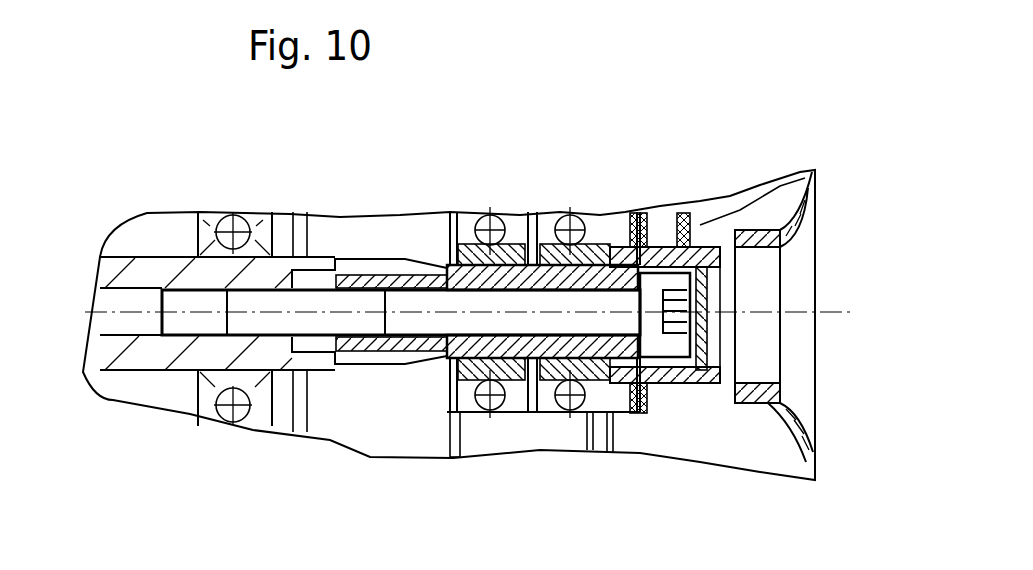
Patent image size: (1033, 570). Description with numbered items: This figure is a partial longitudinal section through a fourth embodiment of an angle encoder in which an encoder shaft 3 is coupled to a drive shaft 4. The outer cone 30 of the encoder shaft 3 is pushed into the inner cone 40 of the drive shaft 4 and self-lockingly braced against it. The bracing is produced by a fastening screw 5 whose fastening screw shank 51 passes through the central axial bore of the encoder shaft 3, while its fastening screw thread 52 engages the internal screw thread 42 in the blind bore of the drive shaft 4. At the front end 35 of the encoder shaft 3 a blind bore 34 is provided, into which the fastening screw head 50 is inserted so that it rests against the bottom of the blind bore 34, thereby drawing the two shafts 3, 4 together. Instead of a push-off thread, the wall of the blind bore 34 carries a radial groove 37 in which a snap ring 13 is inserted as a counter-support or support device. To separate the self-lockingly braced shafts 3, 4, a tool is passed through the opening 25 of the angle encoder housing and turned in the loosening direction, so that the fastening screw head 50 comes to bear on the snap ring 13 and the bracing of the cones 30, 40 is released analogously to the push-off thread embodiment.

The encoder shaft 3 is at (538, 262).
The drive shaft 4 is at (250, 282).
The fastening screw 5 is at (427, 313).
The snap ring 13 is at (703, 338).
The opening 25 is at (767, 285).
The outer cone 30 is at (386, 355).
The blind bore 34 is at (670, 357).
The front end 35 is at (705, 370).
The radial groove 37 is at (707, 240).
The inner cone 40 is at (345, 262).
The internal screw thread 42 is at (183, 283).
The fastening screw head 50 is at (673, 283).
The fastening screw shank 51 is at (472, 332).
The fastening screw thread 52 is at (228, 412).